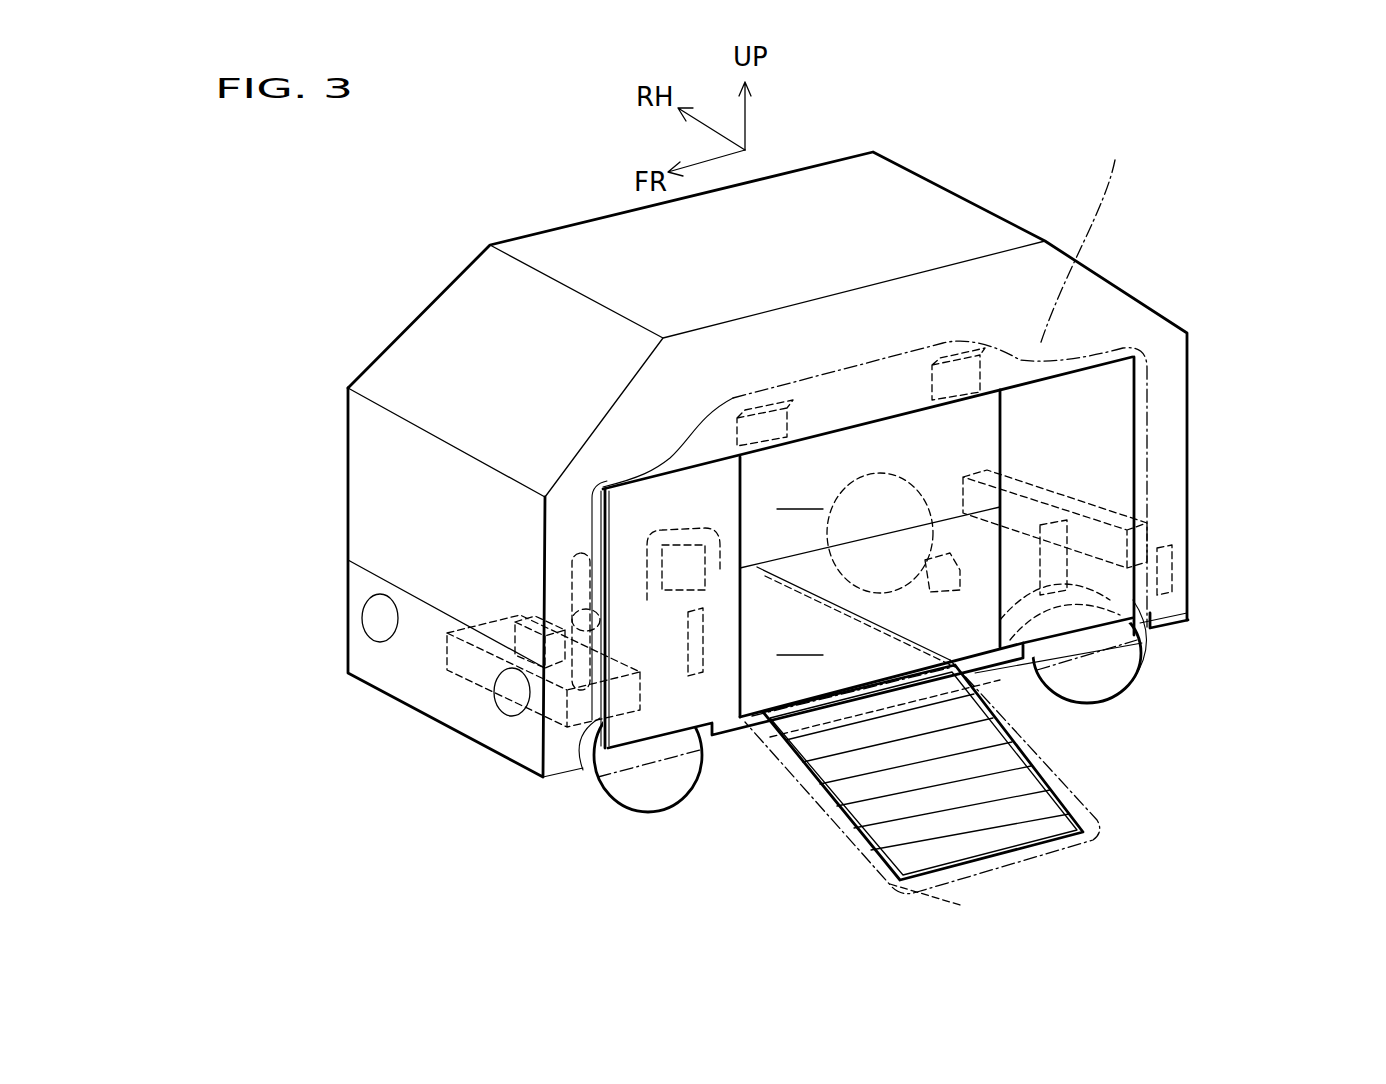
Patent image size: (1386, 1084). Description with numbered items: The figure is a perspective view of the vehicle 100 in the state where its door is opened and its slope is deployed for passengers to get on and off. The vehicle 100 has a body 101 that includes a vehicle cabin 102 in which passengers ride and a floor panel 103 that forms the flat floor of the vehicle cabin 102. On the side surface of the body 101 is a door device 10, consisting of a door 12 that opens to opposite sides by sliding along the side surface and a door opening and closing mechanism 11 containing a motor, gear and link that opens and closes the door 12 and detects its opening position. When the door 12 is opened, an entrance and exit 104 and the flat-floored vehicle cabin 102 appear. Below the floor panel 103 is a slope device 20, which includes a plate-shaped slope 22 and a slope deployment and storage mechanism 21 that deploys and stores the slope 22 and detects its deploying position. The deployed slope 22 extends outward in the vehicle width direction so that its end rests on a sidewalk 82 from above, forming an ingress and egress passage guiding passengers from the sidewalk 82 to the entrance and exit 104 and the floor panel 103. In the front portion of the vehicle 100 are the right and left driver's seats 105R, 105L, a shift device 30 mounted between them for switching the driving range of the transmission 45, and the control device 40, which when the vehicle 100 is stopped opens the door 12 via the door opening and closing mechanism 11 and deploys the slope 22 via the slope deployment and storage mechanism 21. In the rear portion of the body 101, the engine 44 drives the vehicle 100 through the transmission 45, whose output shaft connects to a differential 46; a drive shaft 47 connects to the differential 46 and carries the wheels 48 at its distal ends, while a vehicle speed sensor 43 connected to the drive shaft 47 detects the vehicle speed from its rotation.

The vehicle 100 is at (265, 263).
The body 101 is at (608, 215).
The door device 10 is at (1060, 355).
The door opening and closing mechanism 11 is at (780, 400).
The door 12 is at (765, 722).
The slope device 20 is at (1043, 862).
The slope deployment and storage mechanism 21 is at (647, 530).
The slope 22 is at (967, 863).
The shift device 30 is at (540, 603).
The control device 40 is at (470, 672).
The vehicle speed sensor 43 is at (985, 688).
The engine 44 is at (1025, 485).
The transmission 45 is at (1170, 545).
The differential 46 is at (978, 650).
The drive shaft 47 is at (1040, 540).
The wheels 48 is at (1140, 665).
The sidewalk 82 is at (826, 900).
The vehicle cabin 102 is at (802, 495).
The floor panel 103 is at (802, 641).
The entrance and exit 104 is at (833, 437).
The driver's seat 105L is at (657, 778).
The driver's seat 105R is at (575, 600).